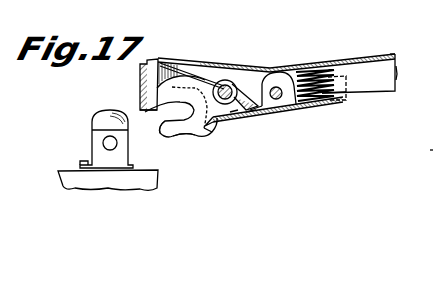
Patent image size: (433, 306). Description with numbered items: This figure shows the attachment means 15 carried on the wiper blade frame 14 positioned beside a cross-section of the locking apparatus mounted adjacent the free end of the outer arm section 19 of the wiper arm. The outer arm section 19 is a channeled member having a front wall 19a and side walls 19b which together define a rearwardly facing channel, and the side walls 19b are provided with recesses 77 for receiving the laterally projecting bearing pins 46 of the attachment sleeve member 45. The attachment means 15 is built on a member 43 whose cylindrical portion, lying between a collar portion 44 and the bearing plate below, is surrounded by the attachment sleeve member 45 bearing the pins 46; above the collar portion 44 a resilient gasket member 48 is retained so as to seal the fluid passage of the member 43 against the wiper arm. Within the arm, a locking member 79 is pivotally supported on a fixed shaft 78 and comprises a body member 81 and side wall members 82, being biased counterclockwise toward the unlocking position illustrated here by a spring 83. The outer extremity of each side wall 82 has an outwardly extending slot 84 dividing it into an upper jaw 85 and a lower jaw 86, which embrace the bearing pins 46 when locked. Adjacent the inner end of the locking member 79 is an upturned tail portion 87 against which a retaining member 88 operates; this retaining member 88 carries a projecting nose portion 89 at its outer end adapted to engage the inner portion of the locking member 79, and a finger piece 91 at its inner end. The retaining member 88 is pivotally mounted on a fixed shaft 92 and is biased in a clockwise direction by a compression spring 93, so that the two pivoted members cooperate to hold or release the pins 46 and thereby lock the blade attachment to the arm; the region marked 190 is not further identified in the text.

The wiper blade frame 14 is at (430, 197).
The attachment means 15 is at (156, 188).
The outer arm section 19 is at (400, 102).
The front wall 19a is at (398, 74).
The side walls 19b is at (250, 114).
The housing end 190 is at (396, 53).
The member 43 is at (432, 150).
The collar portion 44 is at (78, 164).
The attachment sleeve member 45 is at (93, 148).
The bearing pins 46 is at (114, 149).
The resilient gasket member 48 is at (100, 111).
The recesses 77 is at (189, 60).
The fixed shaft 78 is at (228, 80).
The locking member 79 is at (209, 78).
The body member 81 is at (236, 114).
The side wall members 82 is at (207, 122).
The spring 83 is at (243, 80).
The outwardly extending slot 84 is at (163, 128).
The upper jaw 85 is at (148, 112).
The lower jaw 86 is at (184, 137).
The upturned tail portion 87 is at (266, 82).
The retaining member 88 is at (298, 112).
The projecting nose portion 89 is at (260, 110).
The finger piece 91 is at (346, 96).
The fixed shaft 92 is at (295, 72).
The compression spring 93 is at (326, 64).